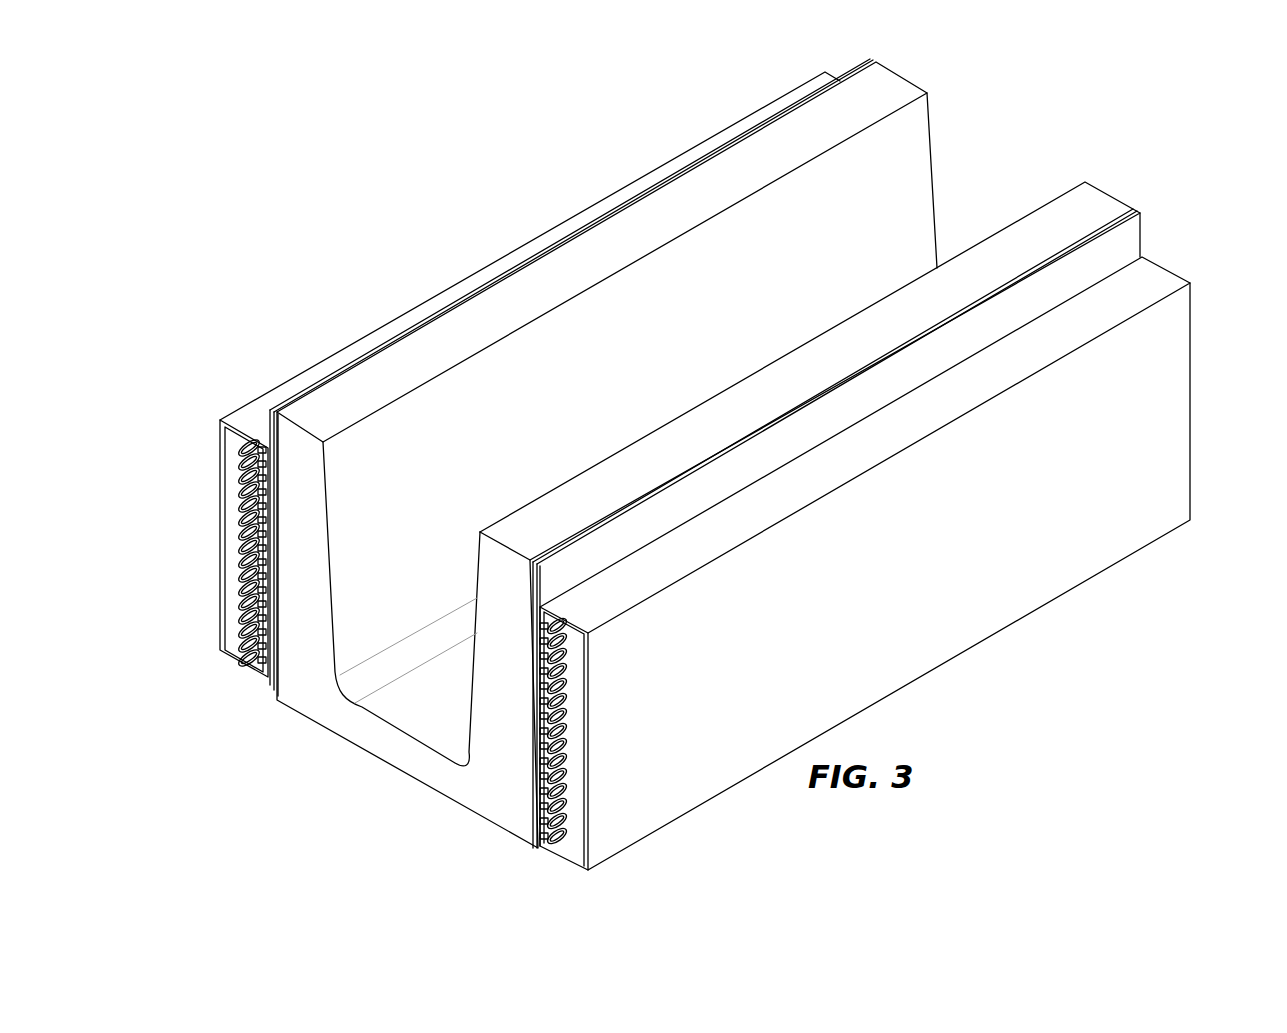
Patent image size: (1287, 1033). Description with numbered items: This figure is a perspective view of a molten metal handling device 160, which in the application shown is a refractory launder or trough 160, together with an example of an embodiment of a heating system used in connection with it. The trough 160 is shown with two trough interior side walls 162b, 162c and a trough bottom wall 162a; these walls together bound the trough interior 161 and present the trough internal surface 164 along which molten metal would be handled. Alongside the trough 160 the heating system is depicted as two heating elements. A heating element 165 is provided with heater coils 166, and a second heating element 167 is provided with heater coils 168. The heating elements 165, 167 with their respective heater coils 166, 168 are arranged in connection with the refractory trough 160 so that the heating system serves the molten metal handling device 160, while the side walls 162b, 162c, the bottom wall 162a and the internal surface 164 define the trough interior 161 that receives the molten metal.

The molten metal handling device 160 is at (650, 453).
The trough interior 161 is at (832, 489).
The trough bottom wall 162a is at (392, 748).
The trough interior side wall 162b is at (607, 269).
The trough interior side wall 162c is at (786, 403).
The trough internal surface 164 is at (451, 692).
The heating element 165 is at (908, 558).
The heater coils 166 is at (557, 840).
The heating element 167 is at (252, 412).
The heater coils 168 is at (238, 462).